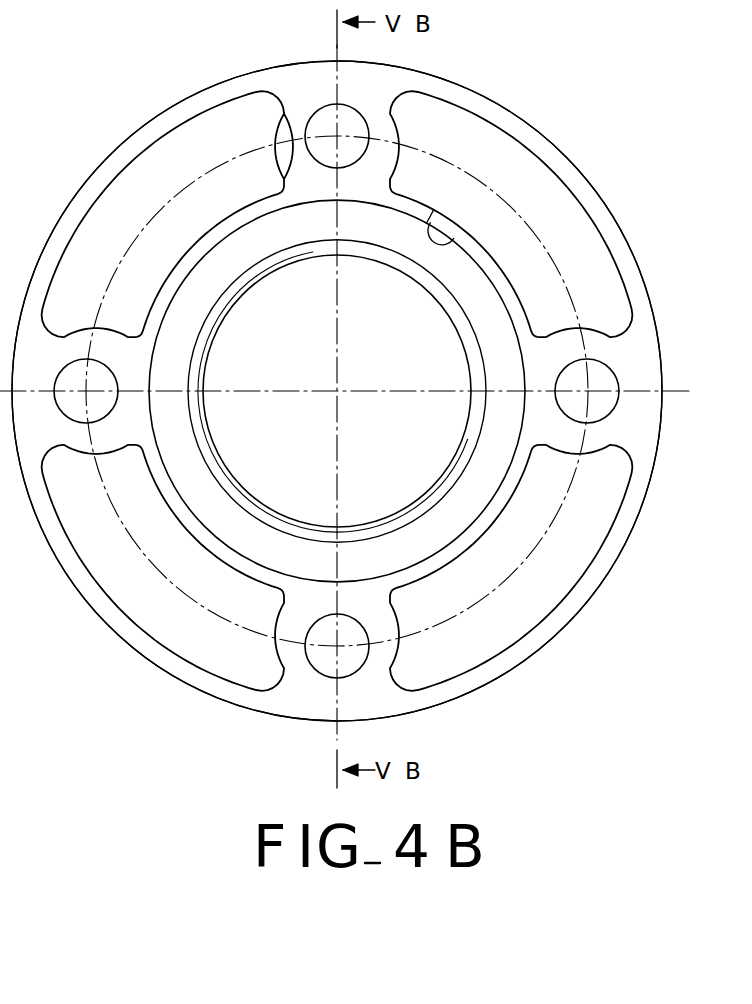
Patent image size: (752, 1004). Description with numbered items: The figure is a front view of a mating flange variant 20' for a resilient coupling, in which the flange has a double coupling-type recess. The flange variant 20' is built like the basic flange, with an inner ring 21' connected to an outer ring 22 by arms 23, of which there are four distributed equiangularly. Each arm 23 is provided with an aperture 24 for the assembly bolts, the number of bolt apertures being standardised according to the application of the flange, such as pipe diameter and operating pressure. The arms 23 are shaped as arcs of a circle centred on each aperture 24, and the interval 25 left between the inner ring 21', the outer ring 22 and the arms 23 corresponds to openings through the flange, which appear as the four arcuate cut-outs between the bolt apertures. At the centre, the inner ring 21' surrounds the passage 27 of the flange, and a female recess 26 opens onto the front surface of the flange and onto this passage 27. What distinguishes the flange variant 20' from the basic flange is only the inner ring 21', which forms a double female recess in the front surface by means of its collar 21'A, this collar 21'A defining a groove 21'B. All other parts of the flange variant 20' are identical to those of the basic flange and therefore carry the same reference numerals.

The flange variant 20' is at (337, 363).
The outer ring 22 is at (492, 108).
The arms 23 is at (375, 118).
The inner ring 21' is at (385, 329).
The interval 25 is at (552, 193).
The female recess 26 is at (482, 293).
The passage 27 is at (427, 347).
The collar 21'A is at (267, 392).
The groove 21'B is at (402, 488).
The apertures 24 is at (600, 407).